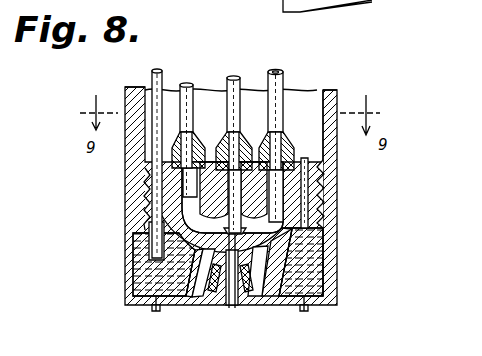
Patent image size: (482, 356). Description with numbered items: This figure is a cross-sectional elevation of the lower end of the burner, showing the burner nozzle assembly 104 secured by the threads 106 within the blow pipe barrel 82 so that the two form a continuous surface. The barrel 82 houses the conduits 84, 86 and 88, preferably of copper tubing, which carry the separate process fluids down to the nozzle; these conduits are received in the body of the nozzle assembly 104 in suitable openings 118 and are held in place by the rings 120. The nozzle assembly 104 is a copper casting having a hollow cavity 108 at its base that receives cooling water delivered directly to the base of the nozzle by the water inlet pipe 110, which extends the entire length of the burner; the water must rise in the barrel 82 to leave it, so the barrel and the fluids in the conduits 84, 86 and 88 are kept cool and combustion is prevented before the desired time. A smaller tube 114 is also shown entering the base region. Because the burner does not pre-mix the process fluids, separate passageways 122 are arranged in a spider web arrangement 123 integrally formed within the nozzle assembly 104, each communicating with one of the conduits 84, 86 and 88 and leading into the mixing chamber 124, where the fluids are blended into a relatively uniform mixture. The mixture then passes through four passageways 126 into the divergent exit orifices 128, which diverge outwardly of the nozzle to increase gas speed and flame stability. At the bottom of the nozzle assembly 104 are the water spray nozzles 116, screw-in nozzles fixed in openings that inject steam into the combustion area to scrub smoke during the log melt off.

The blow pipe barrel 82 is at (337, 97).
The conduit 84 is at (276, 74).
The conduit 86 is at (233, 78).
The conduit 88 is at (187, 84).
The burner nozzle assembly 104 is at (123, 256).
The threads 106 is at (318, 200).
The hollow cavity 108 is at (318, 258).
The water inlet pipe 110 is at (152, 79).
The vent tube 114 is at (305, 158).
The water spray nozzles 116 is at (156, 308).
The openings 118 is at (250, 150).
The rings 120 is at (196, 136).
The passageways 122 is at (196, 190).
The spider web arrangement 123 is at (210, 203).
The mixing chamber 124 is at (322, 222).
The passageways 126 is at (268, 305).
The divergent exit orifices 128 is at (238, 307).